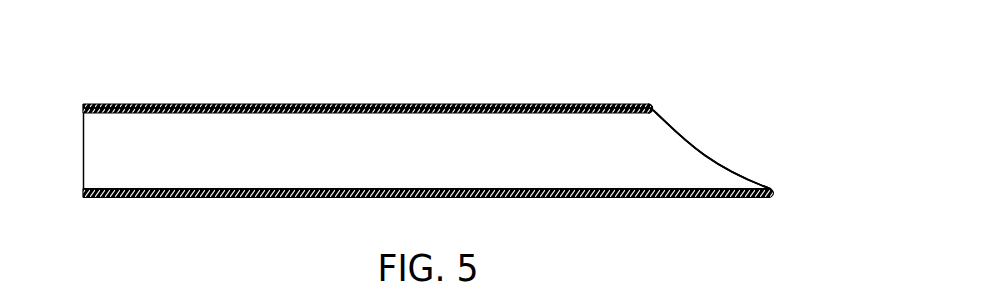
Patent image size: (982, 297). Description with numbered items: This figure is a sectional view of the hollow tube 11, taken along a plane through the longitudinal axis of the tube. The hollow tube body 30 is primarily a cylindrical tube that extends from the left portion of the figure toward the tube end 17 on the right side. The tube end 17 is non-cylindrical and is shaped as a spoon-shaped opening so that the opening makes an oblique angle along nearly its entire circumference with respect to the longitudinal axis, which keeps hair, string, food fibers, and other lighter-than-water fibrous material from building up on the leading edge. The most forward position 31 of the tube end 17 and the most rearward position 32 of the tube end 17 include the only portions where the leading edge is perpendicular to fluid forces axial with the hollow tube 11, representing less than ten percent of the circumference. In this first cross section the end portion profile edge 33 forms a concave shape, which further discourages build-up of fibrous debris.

The hollow tube 11 is at (458, 120).
The hollow tube body 30 is at (415, 104).
The most forward position 31 is at (771, 186).
The most rearward position 32 is at (652, 104).
The end portion profile edge 33 is at (666, 118).
The tube end 17 is at (706, 141).